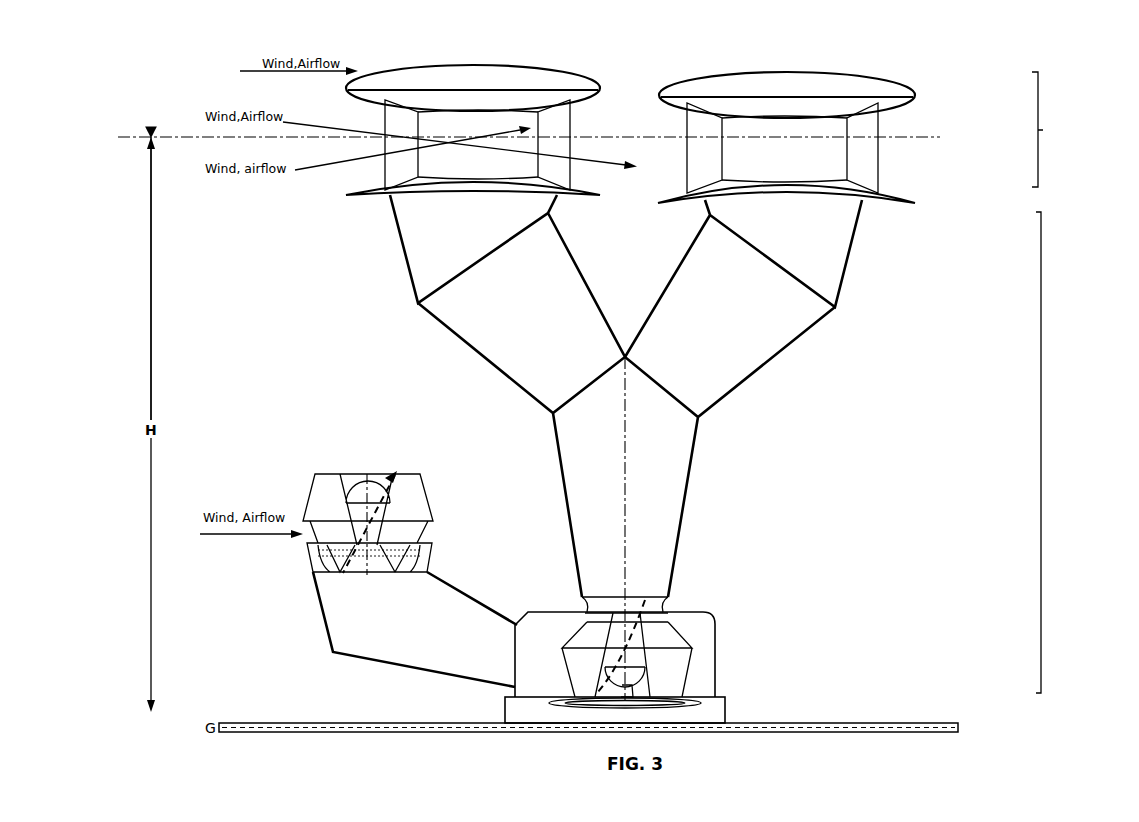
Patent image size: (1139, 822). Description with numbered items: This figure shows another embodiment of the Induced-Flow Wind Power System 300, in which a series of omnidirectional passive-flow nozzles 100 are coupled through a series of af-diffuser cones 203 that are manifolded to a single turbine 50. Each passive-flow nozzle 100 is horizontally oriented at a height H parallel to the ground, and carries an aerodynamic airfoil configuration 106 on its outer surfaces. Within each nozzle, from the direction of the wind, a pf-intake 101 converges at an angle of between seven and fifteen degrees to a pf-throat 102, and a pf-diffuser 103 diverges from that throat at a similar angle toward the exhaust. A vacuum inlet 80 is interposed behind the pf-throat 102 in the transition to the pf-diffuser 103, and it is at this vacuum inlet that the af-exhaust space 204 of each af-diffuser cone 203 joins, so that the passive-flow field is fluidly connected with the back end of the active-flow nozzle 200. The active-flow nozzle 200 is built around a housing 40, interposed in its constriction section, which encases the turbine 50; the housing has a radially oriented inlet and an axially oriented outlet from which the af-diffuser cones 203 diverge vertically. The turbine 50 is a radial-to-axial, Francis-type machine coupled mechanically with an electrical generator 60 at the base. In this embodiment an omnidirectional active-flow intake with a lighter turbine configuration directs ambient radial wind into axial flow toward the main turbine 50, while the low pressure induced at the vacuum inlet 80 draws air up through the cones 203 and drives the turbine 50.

The induced-flow wind power system coupled with pressurized vessel 300 is at (220, 62).
The passive-flow nozzle 100 is at (1061, 129).
The active-flow nozzle 200 is at (1063, 452).
The aerodynamic airfoil configuration 106 is at (800, 82).
The pf-diffuser 103 is at (702, 147).
The pf-throat 102 is at (788, 158).
The vacuum inlet 80 is at (800, 182).
The af-diffuser cone 203 is at (543, 367).
The af-exhaust space 204 is at (777, 210).
The housing 40 is at (686, 625).
The radial-to-axial turbine 50 is at (333, 473).
The electrical generator 60 is at (724, 698).
The pf-intake 101 is at (373, 627).